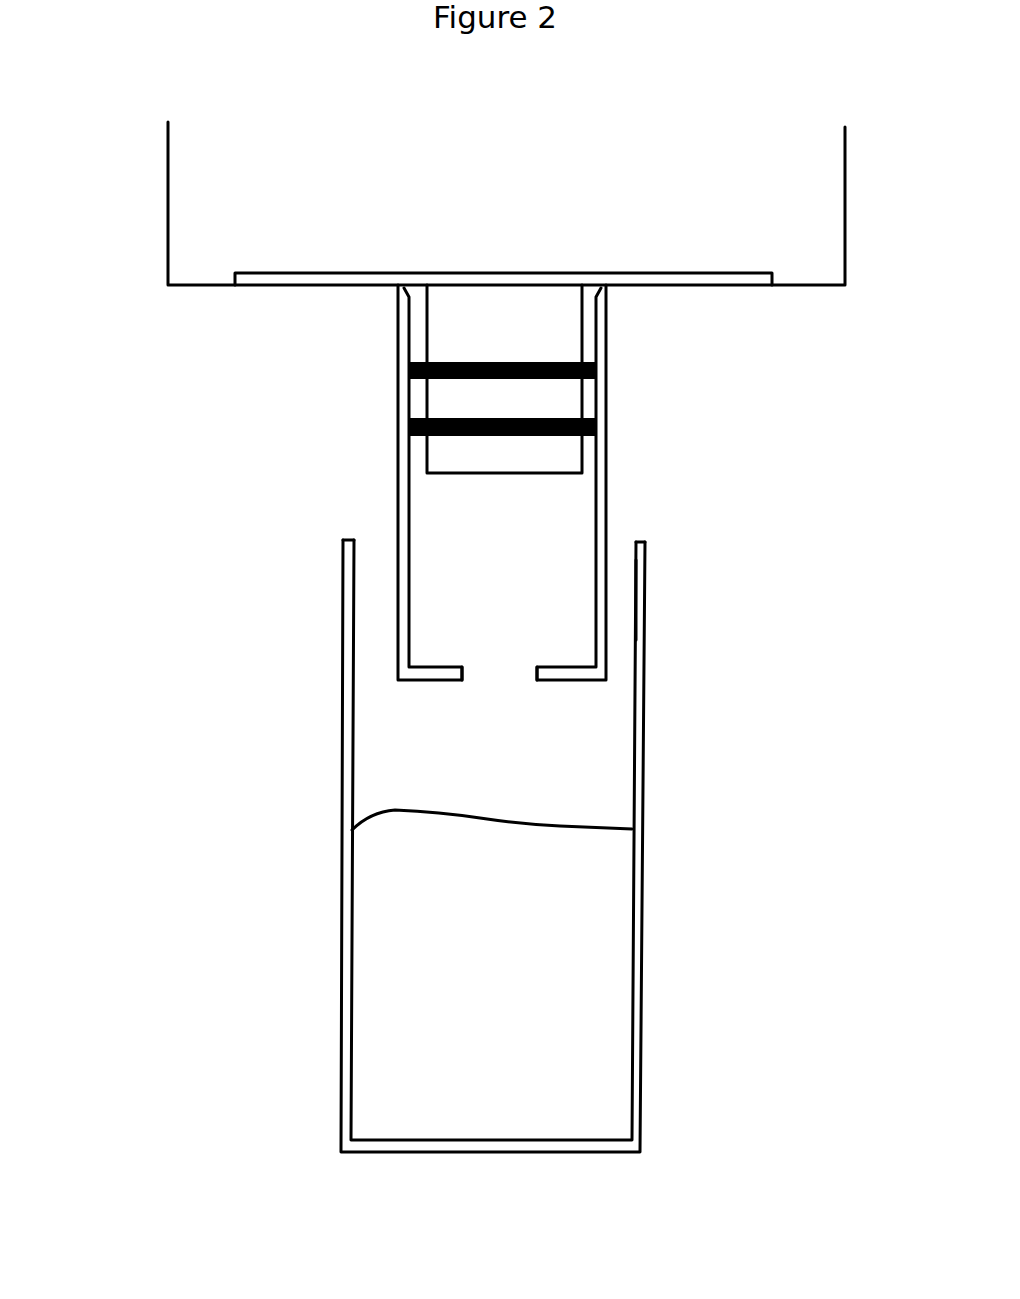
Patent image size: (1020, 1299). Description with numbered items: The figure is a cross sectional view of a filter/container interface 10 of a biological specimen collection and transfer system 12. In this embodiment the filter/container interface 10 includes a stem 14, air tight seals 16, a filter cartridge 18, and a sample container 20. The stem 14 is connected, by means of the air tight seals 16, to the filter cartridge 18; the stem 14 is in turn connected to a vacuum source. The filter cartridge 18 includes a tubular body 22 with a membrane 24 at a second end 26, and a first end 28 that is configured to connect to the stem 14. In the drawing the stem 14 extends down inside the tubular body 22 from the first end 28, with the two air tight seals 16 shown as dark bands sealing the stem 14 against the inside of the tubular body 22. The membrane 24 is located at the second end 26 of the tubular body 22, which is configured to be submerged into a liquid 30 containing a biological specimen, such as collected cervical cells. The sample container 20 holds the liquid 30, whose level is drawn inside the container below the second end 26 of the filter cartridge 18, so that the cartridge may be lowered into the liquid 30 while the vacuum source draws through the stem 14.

The filter/container interface 10 is at (260, 640).
The biological specimen collection and transfer system 12 is at (232, 73).
The stem 14 is at (550, 325).
The air tight seals 16 is at (598, 378).
The filter cartridge 18 is at (606, 503).
The sample container 20 is at (353, 730).
The tubular body 22 is at (343, 420).
The membrane 24 is at (500, 672).
The second end 26 is at (655, 643).
The first end 28 is at (645, 338).
The liquid 30 is at (417, 917).